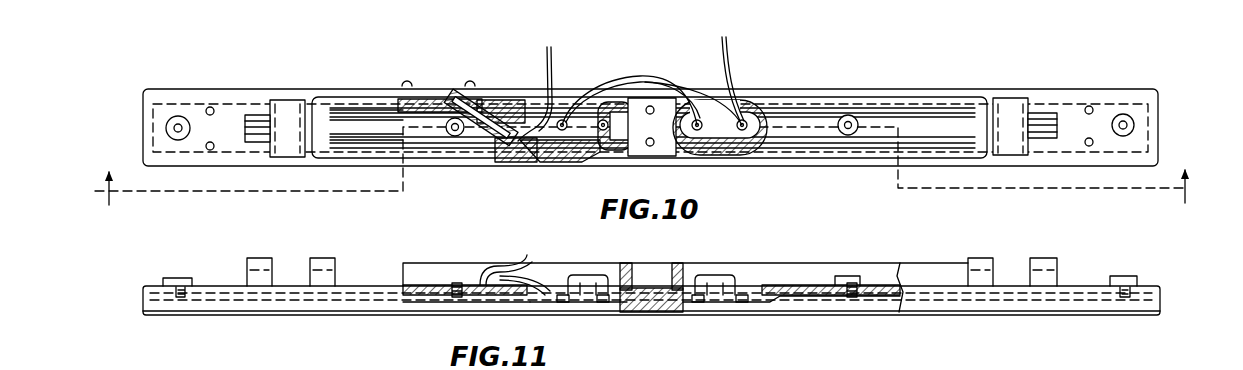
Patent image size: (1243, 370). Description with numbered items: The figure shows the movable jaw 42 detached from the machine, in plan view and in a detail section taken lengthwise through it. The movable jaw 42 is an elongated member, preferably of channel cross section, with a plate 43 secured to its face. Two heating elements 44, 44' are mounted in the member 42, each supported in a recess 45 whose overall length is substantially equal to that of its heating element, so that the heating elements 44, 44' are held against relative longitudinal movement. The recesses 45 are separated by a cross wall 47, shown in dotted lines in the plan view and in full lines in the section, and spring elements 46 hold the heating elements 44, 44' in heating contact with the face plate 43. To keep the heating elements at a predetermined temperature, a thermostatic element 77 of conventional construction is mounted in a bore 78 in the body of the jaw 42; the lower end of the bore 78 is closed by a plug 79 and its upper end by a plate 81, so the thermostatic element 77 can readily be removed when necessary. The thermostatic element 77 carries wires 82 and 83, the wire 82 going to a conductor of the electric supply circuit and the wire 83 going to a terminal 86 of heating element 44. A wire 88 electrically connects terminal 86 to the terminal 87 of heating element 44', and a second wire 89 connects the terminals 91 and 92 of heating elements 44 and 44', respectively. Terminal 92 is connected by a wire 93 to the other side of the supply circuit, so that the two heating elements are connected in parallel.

In FIG. 10, the movable jaw 42 is at (1160, 118).
In FIG. 11, the movable jaw 42 is at (1164, 298).
In FIG. 11, the plate 43 is at (330, 318).
In FIG. 10, the heating element 44 is at (275, 105).
In FIG. 11, the heating element 44 is at (680, 316).
In FIG. 10, the heating element 44' is at (1041, 103).
In FIG. 11, the heating element 44' is at (793, 312).
In FIG. 10, the recess 45 is at (212, 106).
In FIG. 11, the recess 45 is at (627, 304).
In FIG. 10, the spring element 46 is at (179, 118).
In FIG. 11, the spring element 46 is at (178, 300).
In FIG. 10, the cross wall 47 is at (676, 152).
In FIG. 11, the cross wall 47 is at (655, 312).
In FIG. 10, the thermostatic element 77 is at (482, 104).
In FIG. 10, the bore 78 is at (440, 96).
In FIG. 10, the plug 79 is at (545, 163).
In FIG. 10, the plate 81 is at (430, 90).
In FIG. 10, the wire 82 is at (549, 52).
In FIG. 10, the wire 83 is at (520, 152).
In FIG. 10, the terminal 86 is at (563, 117).
In FIG. 11, the terminal 86 is at (563, 293).
In FIG. 10, the terminal 87 is at (700, 130).
In FIG. 11, the terminal 87 is at (698, 293).
In FIG. 10, the wire 88 is at (598, 84).
In FIG. 10, the second wire 89 is at (712, 93).
In FIG. 10, the terminal 91 is at (606, 131).
In FIG. 11, the terminal 91 is at (604, 293).
In FIG. 10, the terminal 92 is at (746, 119).
In FIG. 11, the terminal 92 is at (744, 293).
In FIG. 10, the wire 93 is at (729, 45).